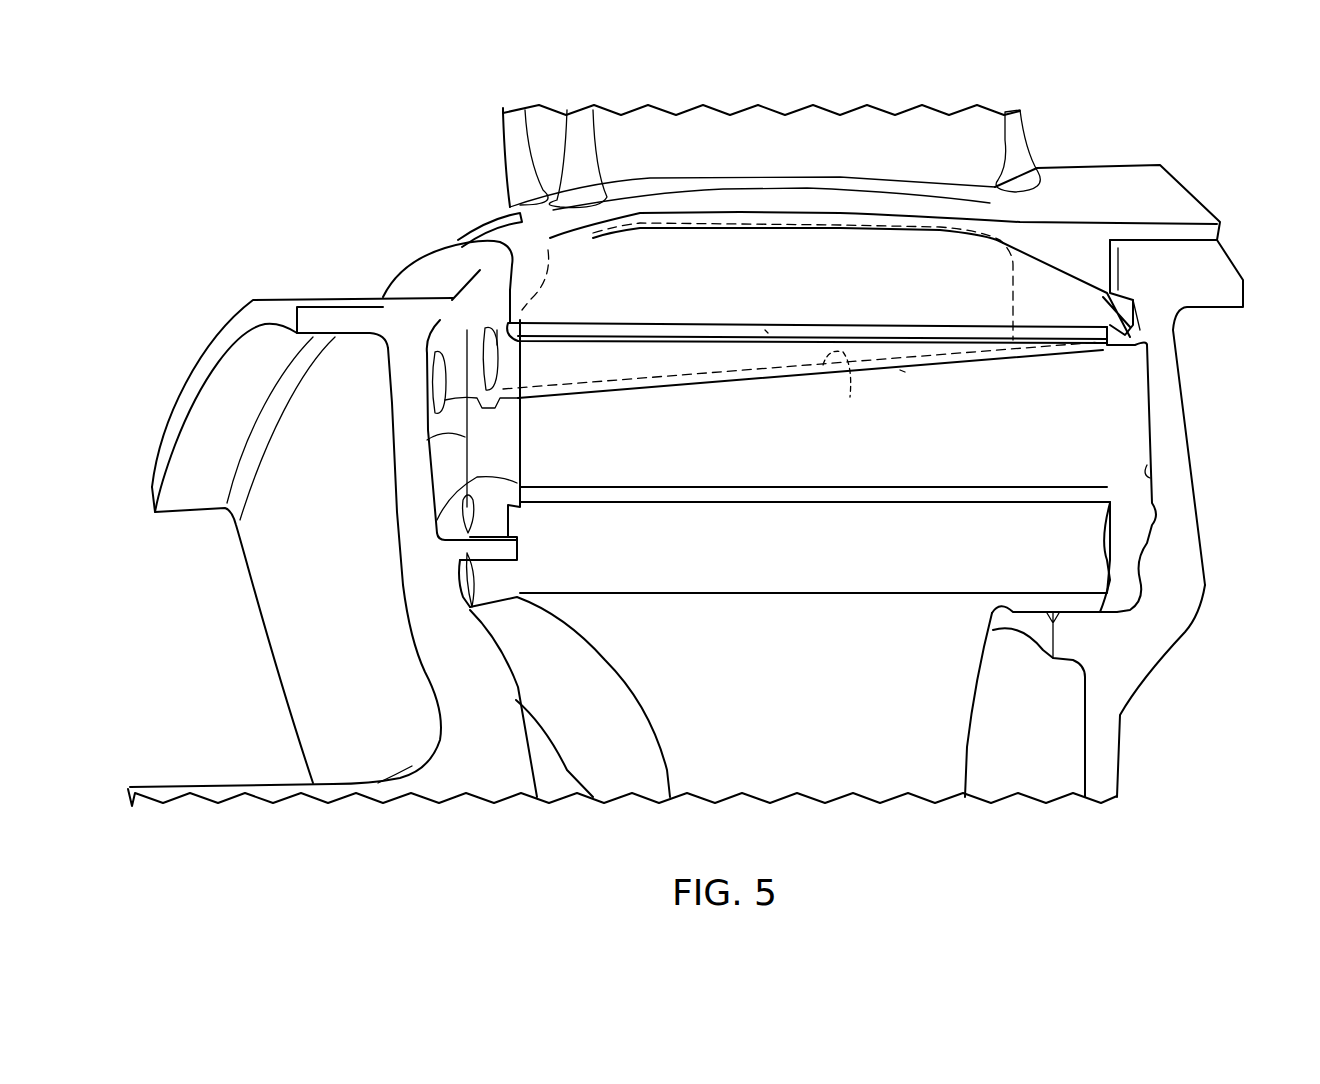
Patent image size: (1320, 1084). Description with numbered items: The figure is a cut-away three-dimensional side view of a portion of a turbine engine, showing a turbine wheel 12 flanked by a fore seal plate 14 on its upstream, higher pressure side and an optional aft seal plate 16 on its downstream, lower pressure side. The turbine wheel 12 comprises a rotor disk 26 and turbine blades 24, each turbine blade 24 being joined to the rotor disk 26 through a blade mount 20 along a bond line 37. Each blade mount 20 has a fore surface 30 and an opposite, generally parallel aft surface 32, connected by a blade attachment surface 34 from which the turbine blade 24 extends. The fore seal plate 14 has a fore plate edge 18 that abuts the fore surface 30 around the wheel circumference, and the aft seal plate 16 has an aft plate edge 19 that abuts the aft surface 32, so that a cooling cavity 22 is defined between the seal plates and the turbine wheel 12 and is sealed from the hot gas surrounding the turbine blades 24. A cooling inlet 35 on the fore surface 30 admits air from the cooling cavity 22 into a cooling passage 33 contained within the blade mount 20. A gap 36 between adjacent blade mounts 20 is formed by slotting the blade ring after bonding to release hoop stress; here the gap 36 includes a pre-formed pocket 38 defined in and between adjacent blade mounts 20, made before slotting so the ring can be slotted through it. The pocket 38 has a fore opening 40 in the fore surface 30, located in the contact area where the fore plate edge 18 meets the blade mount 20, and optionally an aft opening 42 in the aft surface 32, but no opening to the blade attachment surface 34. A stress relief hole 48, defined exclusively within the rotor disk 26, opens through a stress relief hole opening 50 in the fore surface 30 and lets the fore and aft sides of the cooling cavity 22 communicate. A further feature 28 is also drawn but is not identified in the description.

The turbine wheel 12 is at (1215, 230).
The fore seal plate 14 is at (287, 297).
The aft seal plate 16 is at (1197, 533).
The fore plate edge 18 is at (523, 267).
The aft plate edge 19 is at (1113, 293).
The blade mount 20 is at (1110, 345).
The cooling cavity 22 is at (440, 477).
The turbine blade 24 is at (993, 147).
The rotor disk 26 is at (867, 757).
The seal segment 28 is at (1043, 485).
The fore surface 30 is at (470, 424).
The aft surface 32 is at (1115, 387).
The cooling passage 33 is at (843, 387).
The blade attachment surface 34 is at (1110, 190).
The cooling inlet 35 is at (480, 358).
The gap 36 is at (437, 427).
The bond line 37 is at (897, 370).
The pre-formed pocket 38 is at (765, 310).
The fore opening 40 is at (512, 330).
The aft opening 42 is at (1107, 320).
The stress relief hole 48 is at (800, 585).
The stress relief hole opening 50 is at (517, 587).